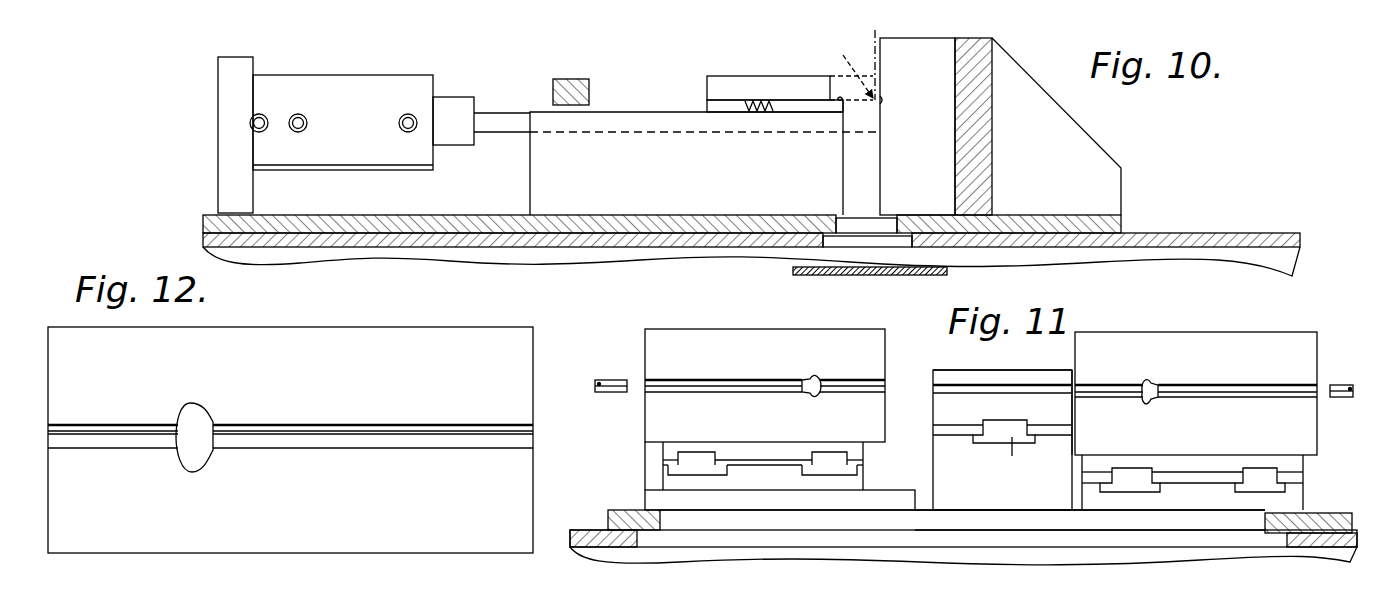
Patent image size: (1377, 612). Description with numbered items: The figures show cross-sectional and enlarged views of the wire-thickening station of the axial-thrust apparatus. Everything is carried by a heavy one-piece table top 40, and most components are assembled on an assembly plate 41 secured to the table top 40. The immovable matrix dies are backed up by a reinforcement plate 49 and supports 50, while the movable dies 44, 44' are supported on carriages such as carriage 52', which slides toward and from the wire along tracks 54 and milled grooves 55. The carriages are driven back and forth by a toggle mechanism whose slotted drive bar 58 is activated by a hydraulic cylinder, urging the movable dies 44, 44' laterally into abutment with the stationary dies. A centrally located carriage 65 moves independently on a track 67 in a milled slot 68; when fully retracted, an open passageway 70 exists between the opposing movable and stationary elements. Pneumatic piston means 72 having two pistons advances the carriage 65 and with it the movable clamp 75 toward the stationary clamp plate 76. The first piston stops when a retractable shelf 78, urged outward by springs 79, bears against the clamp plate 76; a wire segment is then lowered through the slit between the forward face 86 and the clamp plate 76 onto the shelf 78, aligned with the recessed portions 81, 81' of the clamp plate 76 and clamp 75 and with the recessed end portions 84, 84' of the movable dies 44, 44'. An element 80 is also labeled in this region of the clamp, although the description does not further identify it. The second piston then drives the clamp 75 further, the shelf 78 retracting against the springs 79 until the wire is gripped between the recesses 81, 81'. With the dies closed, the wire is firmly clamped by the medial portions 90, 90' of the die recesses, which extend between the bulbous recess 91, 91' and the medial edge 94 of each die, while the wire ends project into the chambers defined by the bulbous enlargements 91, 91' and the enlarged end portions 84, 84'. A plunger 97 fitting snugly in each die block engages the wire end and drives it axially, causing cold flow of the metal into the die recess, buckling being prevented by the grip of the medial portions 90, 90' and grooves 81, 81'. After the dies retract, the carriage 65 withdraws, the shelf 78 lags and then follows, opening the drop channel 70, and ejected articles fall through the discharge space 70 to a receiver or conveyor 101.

In FIG. 10, the table top 40 is at (342, 246).
In FIG. 11, the table top 40 is at (590, 526).
In FIG. 10, the assembly plate 41 is at (1123, 228).
In FIG. 11, the assembly plate 41 is at (623, 508).
In FIG. 12, the movable die 44 is at (290, 422).
In FIG. 11, the movable die 44 is at (1196, 393).
In FIG. 11, the movable die 44' is at (755, 366).
In FIG. 10, the reinforcement plate 49 is at (974, 50).
In FIG. 10, the support 50 is at (1036, 155).
In FIG. 11, the carriage 52' is at (1214, 482).
In FIG. 11, the track 54 is at (1260, 493).
In FIG. 11, the milled groove 55 is at (1255, 468).
In FIG. 10, the slotted drive bar 58 is at (578, 79).
In FIG. 10, the carriage 65 is at (660, 112).
In FIG. 11, the track 67 is at (1025, 455).
In FIG. 11, the milled slot 68 is at (1009, 420).
In FIG. 10, the passageway 70 is at (868, 226).
In FIG. 11, the passageway 70 is at (988, 515).
In FIG. 10, the pneumatic piston means 72 is at (362, 72).
In FIG. 10, the movable clamp 75 is at (723, 76).
In FIG. 11, the movable clamp 75 is at (997, 370).
In FIG. 10, the stationary clamp plate 76 is at (924, 167).
In FIG. 11, the shelf 78 is at (942, 416).
In FIG. 10, the spring 79 is at (757, 106).
In FIG. 10, the pin 80 is at (826, 138).
In FIG. 11, the pin 80 is at (936, 387).
In FIG. 10, the recessed portion 81 is at (905, 89).
In FIG. 10, the recessed portion 81' is at (824, 69).
In FIG. 12, the recessed portion 84 is at (290, 408).
In FIG. 11, the recessed portion 84 is at (1196, 374).
In FIG. 11, the recessed portion 84' is at (765, 367).
In FIG. 10, the forward face 86 is at (834, 78).
In FIG. 12, the medial portion 90 is at (290, 416).
In FIG. 11, the medial portion 90 is at (1196, 374).
In FIG. 11, the medial portion 90' is at (765, 371).
In FIG. 12, the bulbous recess 91 is at (213, 423).
In FIG. 11, the bulbous recess 91 is at (1166, 378).
In FIG. 11, the bulbous enlargement 91' is at (796, 369).
In FIG. 11, the medial edge 94 is at (1075, 358).
In FIG. 11, the plunger 97 is at (612, 392).
In FIG. 10, the receiver or conveyor 101 is at (793, 270).